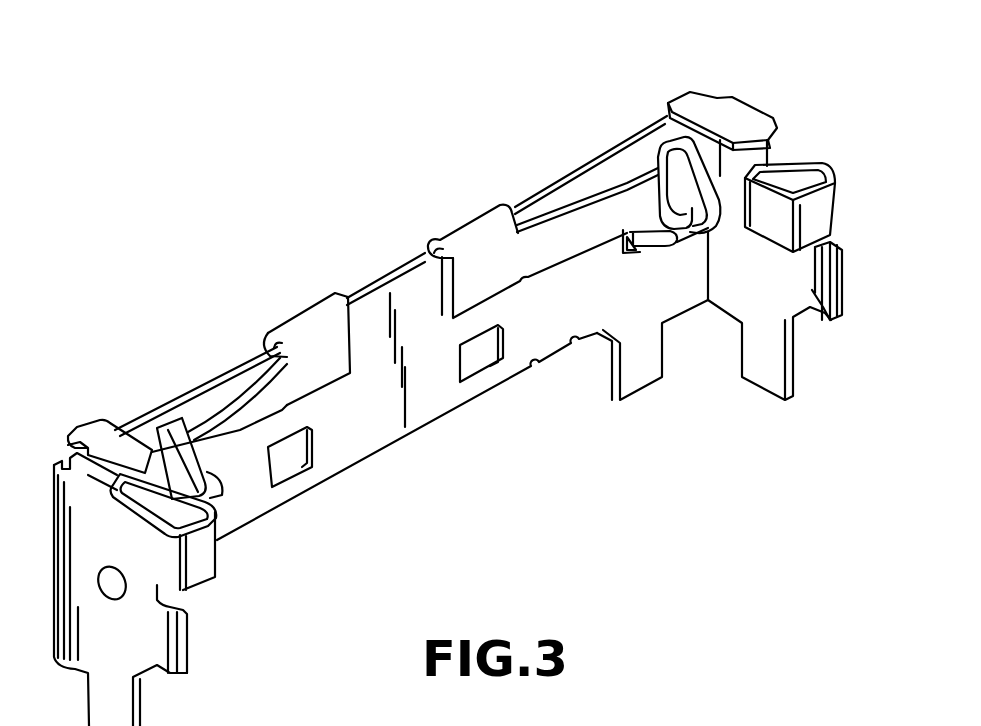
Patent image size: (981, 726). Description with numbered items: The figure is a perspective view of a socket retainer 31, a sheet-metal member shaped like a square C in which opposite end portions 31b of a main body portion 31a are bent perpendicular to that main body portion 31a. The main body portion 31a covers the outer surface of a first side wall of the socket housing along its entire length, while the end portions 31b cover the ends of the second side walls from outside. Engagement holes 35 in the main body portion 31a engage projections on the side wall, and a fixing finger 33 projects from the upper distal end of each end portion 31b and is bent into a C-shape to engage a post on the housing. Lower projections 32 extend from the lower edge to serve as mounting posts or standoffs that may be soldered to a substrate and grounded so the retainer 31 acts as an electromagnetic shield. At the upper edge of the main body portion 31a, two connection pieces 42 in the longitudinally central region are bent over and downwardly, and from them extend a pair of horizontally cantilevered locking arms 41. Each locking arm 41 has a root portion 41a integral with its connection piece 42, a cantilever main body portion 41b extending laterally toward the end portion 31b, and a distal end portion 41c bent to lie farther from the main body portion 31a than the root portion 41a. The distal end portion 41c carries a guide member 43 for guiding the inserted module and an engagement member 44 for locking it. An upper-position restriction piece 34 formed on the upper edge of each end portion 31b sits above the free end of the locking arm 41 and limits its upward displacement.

The retainer 31 is at (364, 296).
The main body portion 31a is at (380, 433).
The end portions 31b is at (830, 323).
The lower projections 32 is at (637, 375).
The fixing finger 33 is at (820, 212).
The upper-position restriction piece 34 is at (688, 100).
The engagement holes 35 is at (475, 357).
The locking arms 41 is at (548, 220).
The root portion 41a is at (475, 273).
The main body portion 41b is at (567, 237).
The distal end portion 41c is at (637, 187).
The connection pieces 42 is at (451, 227).
The guide member 43 is at (663, 125).
The engagement member 44 is at (658, 247).